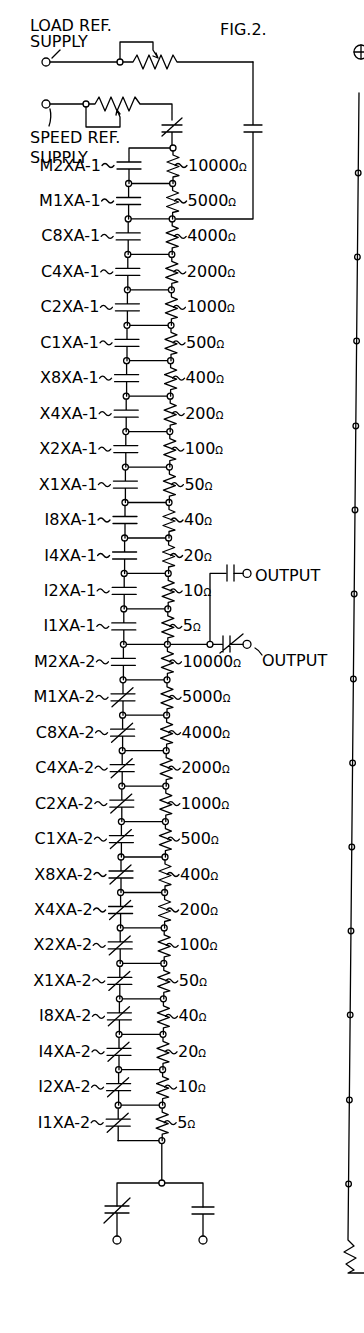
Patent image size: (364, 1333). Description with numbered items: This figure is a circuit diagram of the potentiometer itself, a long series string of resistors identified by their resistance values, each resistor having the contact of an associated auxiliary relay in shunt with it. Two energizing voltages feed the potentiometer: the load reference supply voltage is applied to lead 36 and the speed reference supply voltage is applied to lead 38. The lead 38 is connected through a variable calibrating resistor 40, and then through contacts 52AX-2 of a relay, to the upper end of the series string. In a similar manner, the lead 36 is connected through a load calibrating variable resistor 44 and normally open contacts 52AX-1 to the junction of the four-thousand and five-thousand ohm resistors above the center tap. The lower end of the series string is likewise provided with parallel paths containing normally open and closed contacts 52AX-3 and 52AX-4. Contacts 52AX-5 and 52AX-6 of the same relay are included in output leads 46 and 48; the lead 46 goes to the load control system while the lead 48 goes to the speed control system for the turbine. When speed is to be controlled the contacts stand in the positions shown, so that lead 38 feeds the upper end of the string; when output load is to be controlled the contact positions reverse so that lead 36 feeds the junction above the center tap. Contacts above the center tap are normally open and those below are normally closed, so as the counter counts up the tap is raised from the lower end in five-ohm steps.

The lead 36 is at (80, 62).
The lead 38 is at (84, 101).
The variable calibrating resistor 40 is at (131, 105).
The load calibrating variable resistor 44 is at (185, 47).
The output lead 46 is at (238, 570).
The output lead 48 is at (247, 641).
The normally open contacts 52AX-1 is at (243, 127).
The contacts 52AX-2 is at (179, 123).
The contacts 52AX-3 is at (111, 1211).
The contacts 52AX-4 is at (192, 1212).
The contacts 52AX-5 is at (230, 582).
The contacts 52AX-6 is at (233, 627).